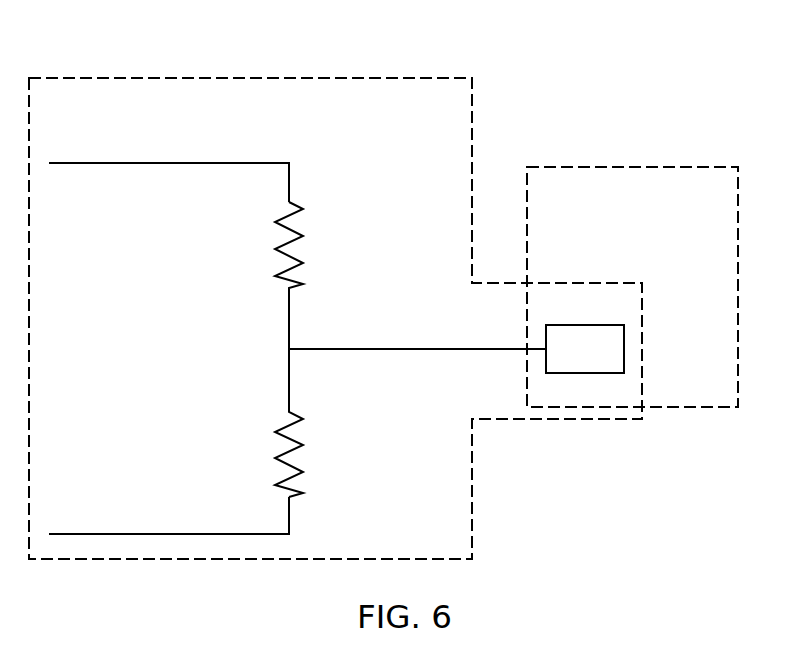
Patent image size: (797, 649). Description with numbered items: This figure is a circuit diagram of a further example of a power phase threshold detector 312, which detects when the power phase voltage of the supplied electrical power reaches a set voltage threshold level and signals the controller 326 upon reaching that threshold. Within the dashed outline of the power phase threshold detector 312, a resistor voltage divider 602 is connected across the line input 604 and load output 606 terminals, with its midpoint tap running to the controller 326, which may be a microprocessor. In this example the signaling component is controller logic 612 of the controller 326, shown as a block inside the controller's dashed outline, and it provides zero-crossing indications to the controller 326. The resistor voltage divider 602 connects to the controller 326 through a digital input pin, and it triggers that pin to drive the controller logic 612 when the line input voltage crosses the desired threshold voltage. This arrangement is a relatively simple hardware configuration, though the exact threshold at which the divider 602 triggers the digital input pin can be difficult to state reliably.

The power phase threshold detector 312 is at (357, 78).
The controller 326 is at (625, 167).
The resistor voltage divider 602 is at (345, 270).
The line input 604 is at (185, 162).
The load output 606 is at (225, 534).
The controller logic 612 is at (606, 360).